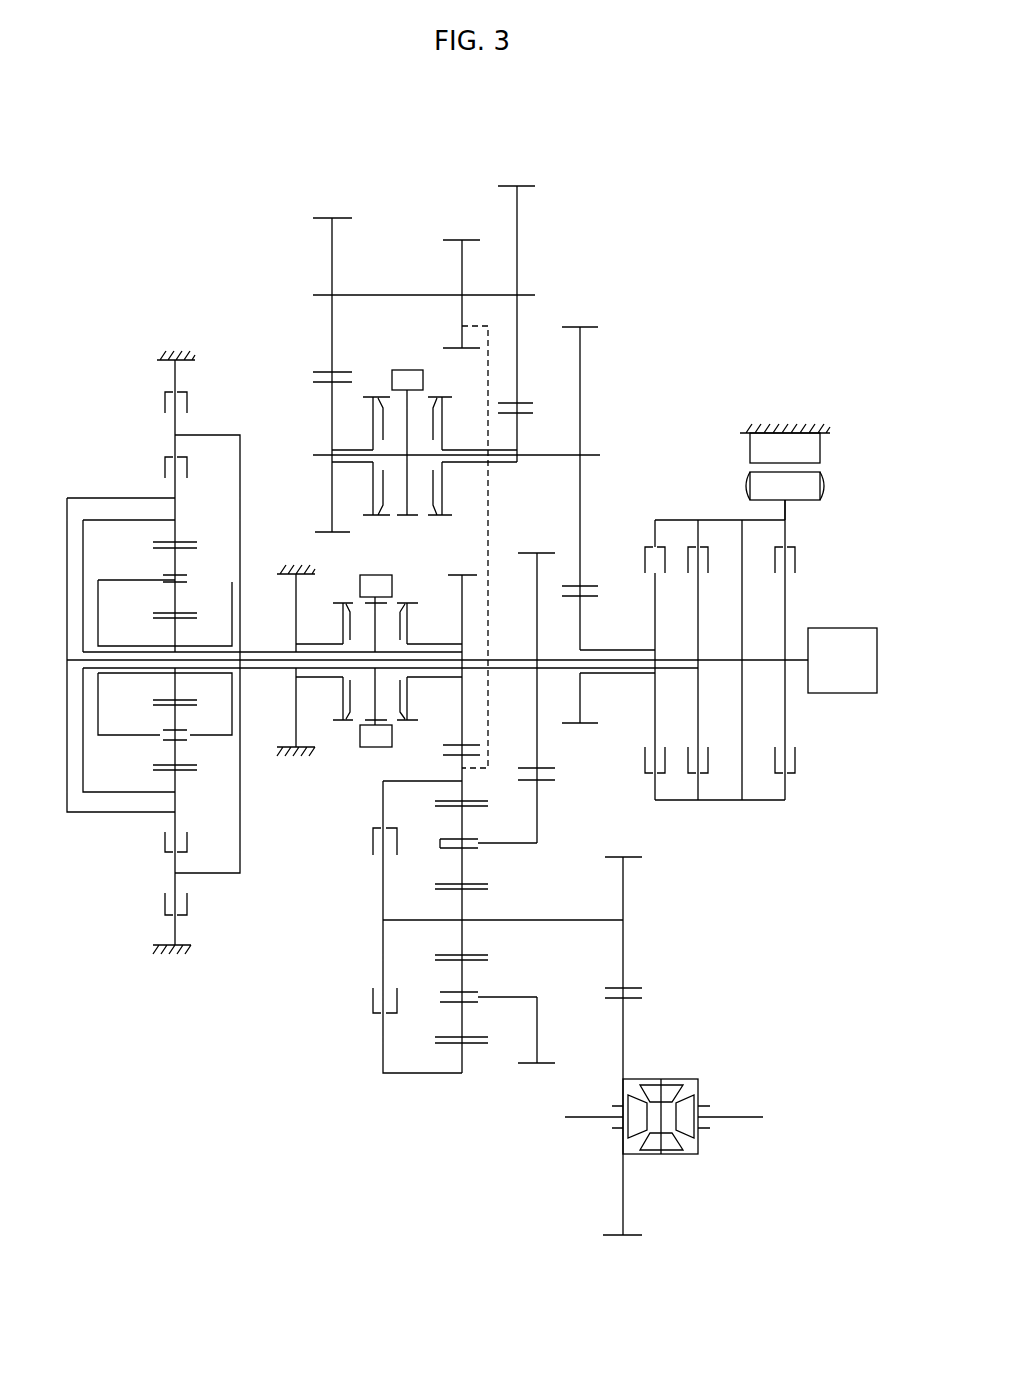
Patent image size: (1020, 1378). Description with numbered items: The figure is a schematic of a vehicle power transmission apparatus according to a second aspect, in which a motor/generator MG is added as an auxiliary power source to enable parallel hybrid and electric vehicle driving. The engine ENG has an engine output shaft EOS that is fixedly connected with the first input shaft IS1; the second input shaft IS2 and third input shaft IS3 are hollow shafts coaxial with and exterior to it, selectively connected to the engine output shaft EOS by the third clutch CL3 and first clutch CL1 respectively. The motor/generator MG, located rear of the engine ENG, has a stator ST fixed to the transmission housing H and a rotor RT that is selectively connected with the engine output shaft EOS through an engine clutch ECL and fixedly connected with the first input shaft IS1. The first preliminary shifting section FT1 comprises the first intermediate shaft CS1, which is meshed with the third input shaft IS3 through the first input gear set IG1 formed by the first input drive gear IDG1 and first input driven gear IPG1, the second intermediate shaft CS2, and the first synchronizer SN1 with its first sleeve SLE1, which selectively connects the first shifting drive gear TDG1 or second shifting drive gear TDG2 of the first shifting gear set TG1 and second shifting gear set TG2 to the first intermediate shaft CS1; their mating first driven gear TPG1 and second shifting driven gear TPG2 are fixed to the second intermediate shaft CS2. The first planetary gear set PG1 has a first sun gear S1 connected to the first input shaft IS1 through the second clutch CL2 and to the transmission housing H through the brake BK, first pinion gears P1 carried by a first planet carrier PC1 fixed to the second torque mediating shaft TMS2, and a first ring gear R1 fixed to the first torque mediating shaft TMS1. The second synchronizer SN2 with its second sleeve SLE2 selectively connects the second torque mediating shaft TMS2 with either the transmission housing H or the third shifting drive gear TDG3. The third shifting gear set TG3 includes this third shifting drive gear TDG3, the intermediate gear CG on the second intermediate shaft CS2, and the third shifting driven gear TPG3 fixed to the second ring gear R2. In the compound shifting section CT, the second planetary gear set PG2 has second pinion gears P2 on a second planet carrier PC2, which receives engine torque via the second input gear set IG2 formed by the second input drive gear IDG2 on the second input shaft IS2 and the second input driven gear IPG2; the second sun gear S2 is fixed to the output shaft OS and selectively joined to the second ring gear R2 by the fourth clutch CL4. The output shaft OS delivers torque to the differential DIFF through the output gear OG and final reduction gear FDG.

The transmission housing H is at (175, 348).
The brake BK is at (154, 396).
The second clutch CL2 is at (155, 464).
The first planetary gear set PG1 is at (153, 690).
The first ring gear R1 is at (190, 540).
The first pinion gears P1 is at (180, 599).
The first sun gear S1 is at (190, 620).
The first planet carrier PC1 is at (126, 583).
The second torque mediating shaft TMS2 is at (267, 649).
The first torque mediating shaft TMS1 is at (253, 670).
The second synchronizer SN2 is at (377, 675).
The second sleeve SLE2 is at (370, 575).
The third shifting gear set TG3 is at (437, 553).
The third shifting drive gear TDG3 is at (462, 628).
The third shifting driven gear TPG3 is at (460, 766).
The second shifting gear set TG2 is at (315, 334).
The second shifting driven gear TPG2 is at (330, 259).
The second shifting drive gear TDG2 is at (332, 413).
The first synchronizer SN1 is at (429, 407).
The first sleeve SLE1 is at (415, 370).
The second intermediate shaft CS2 is at (400, 292).
The first intermediate shaft CS1 is at (555, 458).
The first preliminary shifting section FT1 is at (660, 265).
The intermediate gear CG is at (462, 268).
The first shifting gear set TG1 is at (570, 281).
The first driven gear TPG1 is at (517, 222).
The first shifting drive gear TDG1 is at (535, 431).
The first input gear set IG1 is at (610, 449).
The first input driven gear IPG1 is at (581, 368).
The first input drive gear IDG1 is at (580, 623).
The first input shaft IS1 is at (514, 658).
The third input shaft IS3 is at (632, 648).
The second input shaft IS2 is at (632, 674).
The second input gear set IG2 is at (554, 698).
The second input drive gear IDG2 is at (535, 597).
The second input driven gear IPG2 is at (567, 788).
The motor/generator MG is at (737, 443).
The stator ST is at (785, 449).
The rotor RT is at (785, 496).
The first clutch CL1 is at (643, 538).
The third clutch CL3 is at (686, 538).
The engine clutch ECL is at (804, 552).
The engine output shaft EOS is at (786, 600).
The engine ENG is at (842, 660).
The compound shifting section CT is at (553, 1133).
The second planetary gear set PG2 is at (458, 956).
The second ring gear R2 is at (440, 800).
The second pinion gears P2 is at (460, 866).
The second sun gear S2 is at (460, 904).
The second planet carrier PC2 is at (518, 847).
The fourth clutch CL4 is at (362, 1007).
The output shaft OS is at (572, 924).
The output gear OG is at (627, 953).
The final reduction gear FDG is at (627, 1027).
The differential DIFF is at (710, 1082).